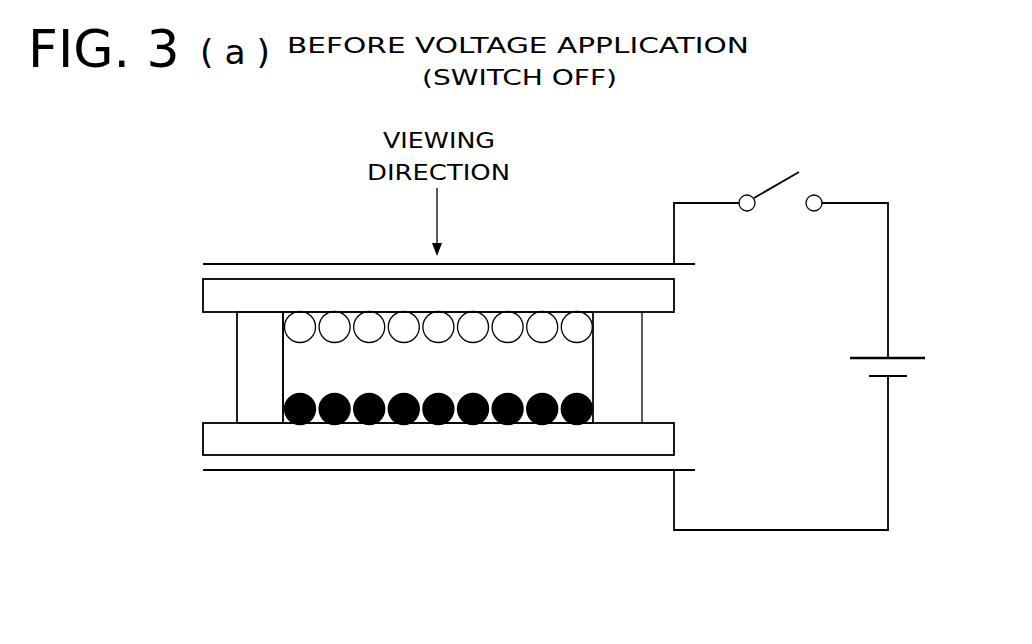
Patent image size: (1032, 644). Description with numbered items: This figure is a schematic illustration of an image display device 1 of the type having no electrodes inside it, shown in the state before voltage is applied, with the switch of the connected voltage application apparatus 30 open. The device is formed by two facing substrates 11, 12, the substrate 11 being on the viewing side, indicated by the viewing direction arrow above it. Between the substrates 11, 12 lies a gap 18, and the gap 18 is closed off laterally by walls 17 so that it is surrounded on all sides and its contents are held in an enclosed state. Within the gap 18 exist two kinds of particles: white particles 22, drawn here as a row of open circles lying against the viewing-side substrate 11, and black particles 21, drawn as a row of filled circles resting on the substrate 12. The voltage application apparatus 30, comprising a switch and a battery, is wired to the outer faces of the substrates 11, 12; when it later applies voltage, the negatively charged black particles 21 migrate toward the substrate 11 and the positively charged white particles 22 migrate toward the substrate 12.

The image display device 1 is at (619, 231).
The substrate 11 is at (212, 293).
The substrate 12 is at (212, 440).
The walls 17 is at (258, 404).
The gap 18 is at (573, 371).
The black particles 21 is at (543, 424).
The white particles 22 is at (540, 320).
The voltage application apparatus 30 is at (788, 531).